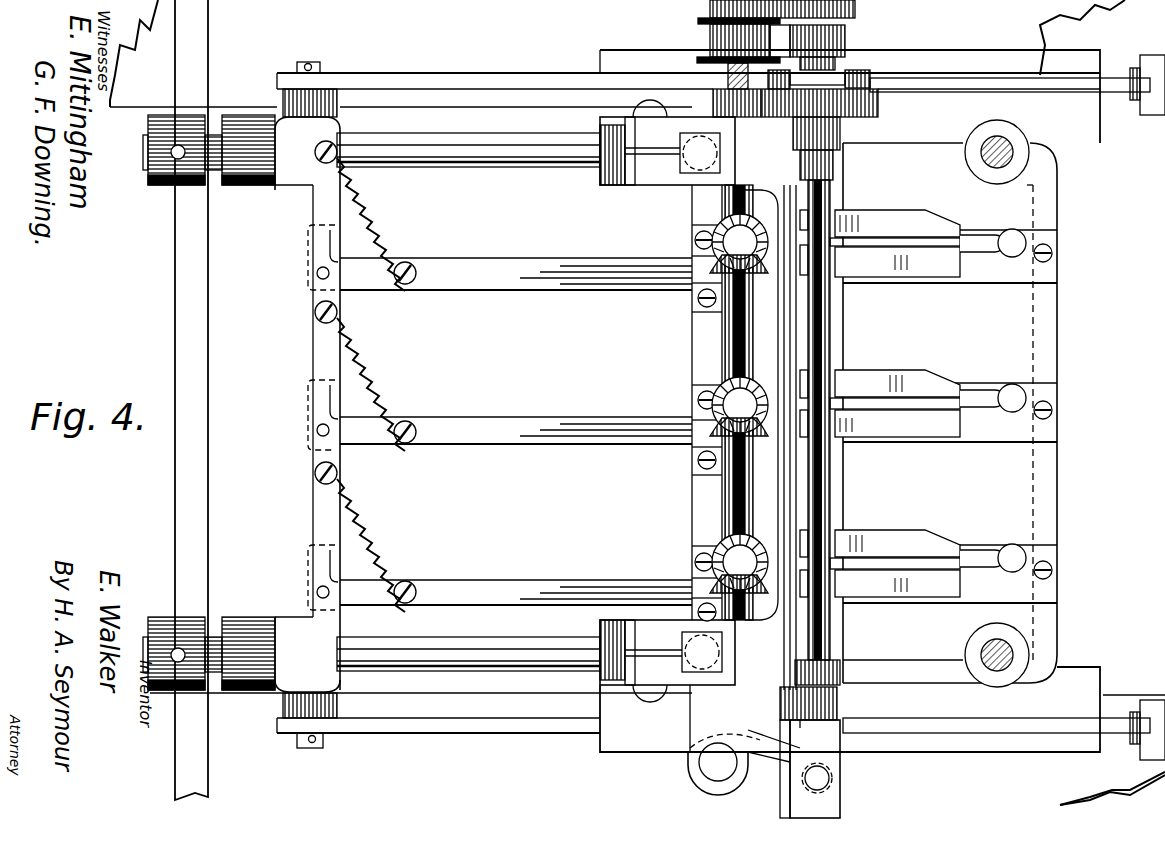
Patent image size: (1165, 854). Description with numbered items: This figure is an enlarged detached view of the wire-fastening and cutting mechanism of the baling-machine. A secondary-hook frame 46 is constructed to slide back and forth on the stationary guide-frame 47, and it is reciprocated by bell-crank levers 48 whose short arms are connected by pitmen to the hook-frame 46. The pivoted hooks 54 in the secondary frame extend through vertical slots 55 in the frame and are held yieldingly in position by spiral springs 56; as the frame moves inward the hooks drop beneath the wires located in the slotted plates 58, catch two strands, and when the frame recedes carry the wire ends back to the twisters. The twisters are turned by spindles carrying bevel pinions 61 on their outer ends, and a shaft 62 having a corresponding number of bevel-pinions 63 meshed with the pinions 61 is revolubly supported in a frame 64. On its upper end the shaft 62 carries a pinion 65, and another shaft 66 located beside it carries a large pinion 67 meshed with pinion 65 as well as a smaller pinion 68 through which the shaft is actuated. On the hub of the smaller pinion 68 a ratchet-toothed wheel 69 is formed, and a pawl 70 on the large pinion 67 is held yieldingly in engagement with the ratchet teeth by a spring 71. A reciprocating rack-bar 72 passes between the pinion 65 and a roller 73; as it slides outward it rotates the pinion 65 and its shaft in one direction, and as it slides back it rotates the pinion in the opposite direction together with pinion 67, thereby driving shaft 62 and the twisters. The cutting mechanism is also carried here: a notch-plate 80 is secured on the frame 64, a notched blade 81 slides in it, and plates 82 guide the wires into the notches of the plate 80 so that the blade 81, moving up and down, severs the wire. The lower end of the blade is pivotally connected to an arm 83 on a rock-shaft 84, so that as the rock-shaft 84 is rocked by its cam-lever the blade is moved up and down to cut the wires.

The secondary-hook frame 46 is at (313, 497).
The stationary guide-frame 47 is at (468, 402).
The bell-crank lever 48 is at (1004, 407).
The pivoted hook 54 is at (516, 431).
The vertical slot 55 is at (312, 288).
The spiral spring 56 is at (377, 385).
The slotted plate 58 is at (950, 403).
The bevel pinion 61 is at (762, 232).
The shaft 62 is at (745, 338).
The bevel-pinion 63 is at (720, 268).
The frame 64 is at (685, 185).
The pinion 65 is at (720, 103).
The shaft 66 is at (830, 333).
The pinion 67 is at (878, 105).
The smaller pinion 68 is at (845, 40).
The ratchet-toothed wheel 69 is at (840, 73).
The pawl 70 is at (782, 79).
The spring 71 is at (870, 77).
The reciprocating rack-bar 72 is at (780, 41).
The roller 73 is at (769, 44).
The notch-plate 80 is at (795, 437).
The notched blade 81 is at (832, 781).
The plate 82 is at (905, 217).
The arm 83 is at (744, 762).
The rock-shaft 84 is at (718, 762).